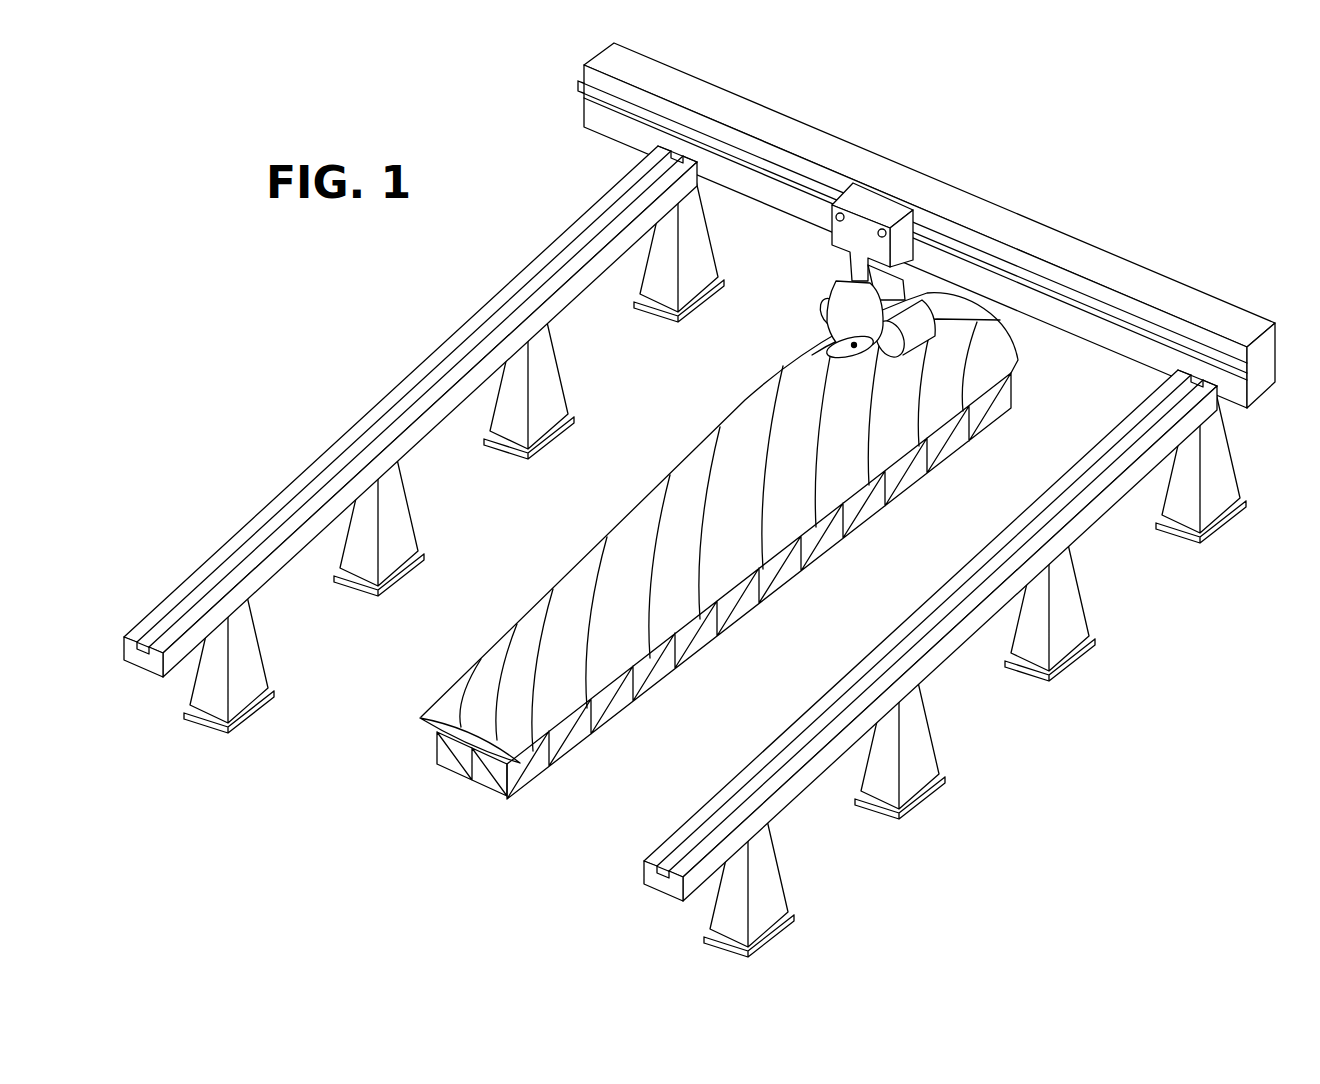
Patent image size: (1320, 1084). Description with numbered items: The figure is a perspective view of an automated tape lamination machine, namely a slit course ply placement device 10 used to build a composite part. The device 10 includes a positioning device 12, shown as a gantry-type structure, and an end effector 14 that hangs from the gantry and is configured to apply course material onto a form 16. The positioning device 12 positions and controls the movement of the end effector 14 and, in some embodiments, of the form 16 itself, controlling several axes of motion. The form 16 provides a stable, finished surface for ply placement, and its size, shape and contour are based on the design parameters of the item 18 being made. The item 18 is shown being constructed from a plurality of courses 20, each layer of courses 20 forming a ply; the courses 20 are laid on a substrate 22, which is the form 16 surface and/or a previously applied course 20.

The slit course ply placement device 10 is at (1054, 180).
The positioning device 12 is at (578, 89).
The end effector 14 is at (838, 287).
The form 16 is at (480, 745).
The item 18 is at (576, 541).
The courses 20 is at (652, 503).
The substrate 22 is at (733, 565).